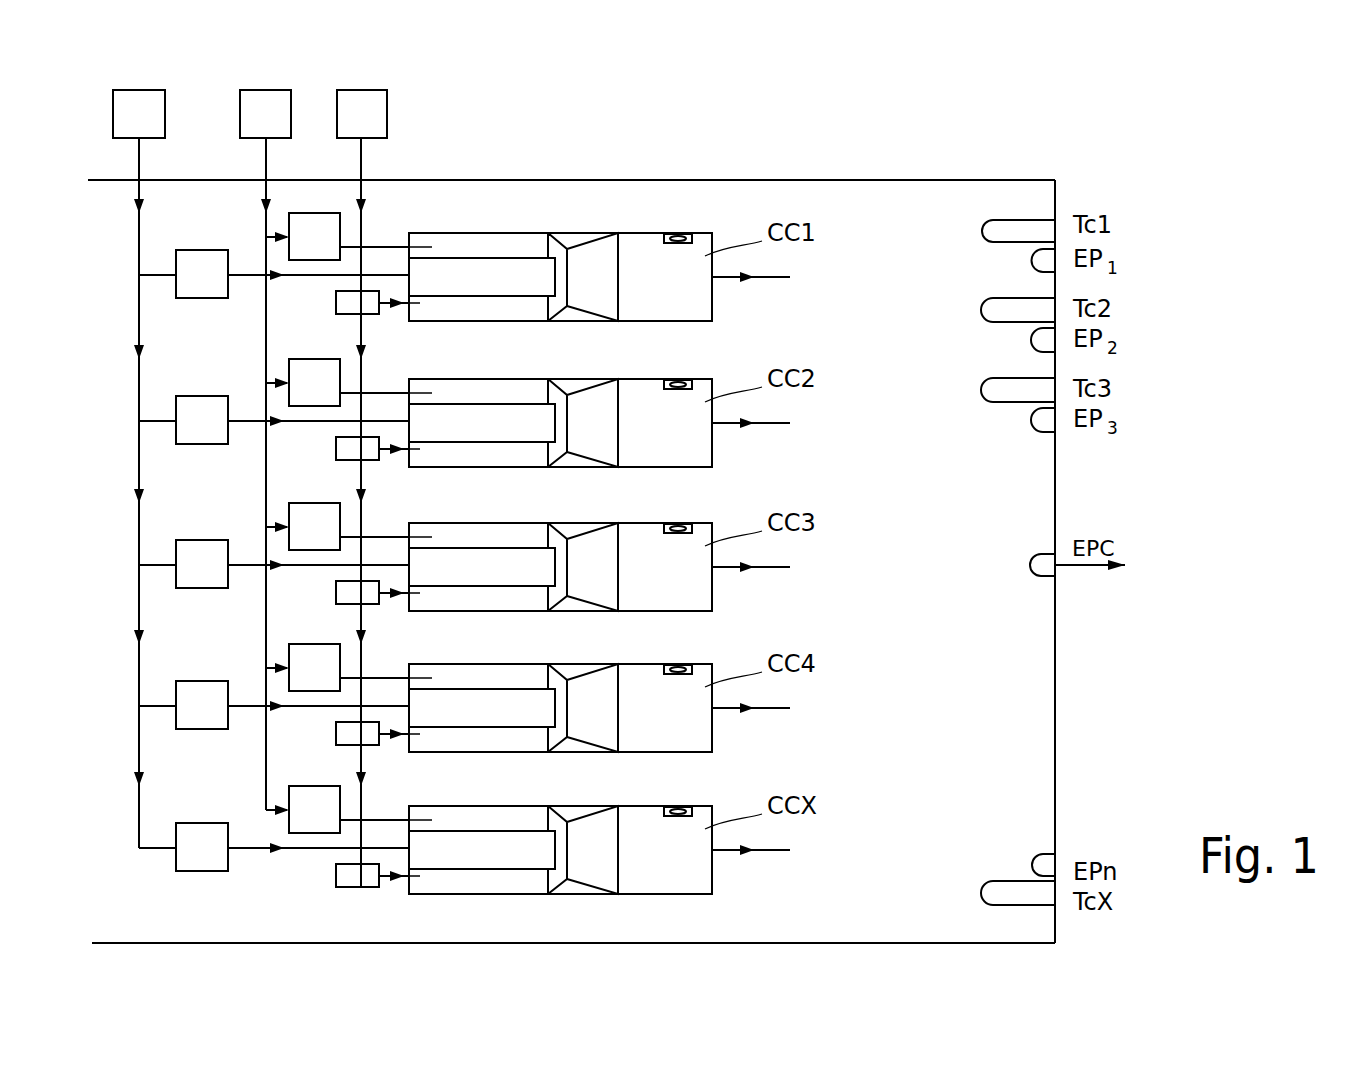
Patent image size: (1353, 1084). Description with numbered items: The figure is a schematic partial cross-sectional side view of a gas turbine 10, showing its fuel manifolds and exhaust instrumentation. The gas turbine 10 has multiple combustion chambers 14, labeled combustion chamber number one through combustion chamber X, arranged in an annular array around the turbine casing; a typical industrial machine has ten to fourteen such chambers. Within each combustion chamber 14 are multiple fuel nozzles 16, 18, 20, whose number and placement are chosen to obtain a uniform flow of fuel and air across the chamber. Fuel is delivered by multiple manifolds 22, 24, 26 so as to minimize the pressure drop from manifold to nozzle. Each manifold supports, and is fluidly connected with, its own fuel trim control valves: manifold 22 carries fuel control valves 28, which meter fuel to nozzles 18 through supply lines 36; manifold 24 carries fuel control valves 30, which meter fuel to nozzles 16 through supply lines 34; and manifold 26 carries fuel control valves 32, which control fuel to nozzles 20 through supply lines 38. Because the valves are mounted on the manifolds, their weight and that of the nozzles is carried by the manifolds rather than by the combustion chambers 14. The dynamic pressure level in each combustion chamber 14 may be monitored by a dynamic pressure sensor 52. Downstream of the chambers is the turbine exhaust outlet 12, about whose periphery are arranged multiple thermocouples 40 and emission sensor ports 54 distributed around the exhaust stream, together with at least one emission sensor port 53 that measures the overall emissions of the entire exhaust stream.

The gas turbine 10 is at (570, 179).
The turbine exhaust outlet 12 is at (1055, 638).
The combustion chamber 14 is at (685, 321).
The fuel nozzle 16 is at (420, 246).
The fuel nozzle 18 is at (420, 272).
The fuel nozzle 20 is at (418, 306).
The fuel manifold 22 is at (142, 87).
The fuel manifold 24 is at (270, 83).
The fuel manifold 26 is at (373, 87).
The fuel control valve 28 is at (198, 298).
The fuel control valve 30 is at (334, 212).
The fuel control valve 32 is at (336, 298).
The supply line 34 is at (384, 245).
The supply line 36 is at (292, 277).
The supply line 38 is at (383, 305).
The thermocouple 40 is at (982, 391).
The dynamic pressure sensor 52 is at (682, 233).
The emission sensor port 53 is at (1038, 568).
The emission sensor port 54 is at (1048, 420).